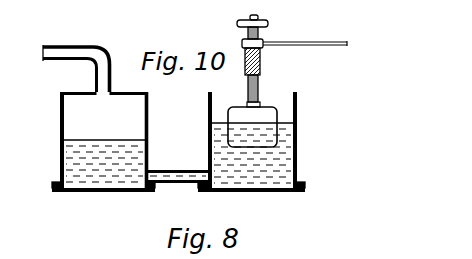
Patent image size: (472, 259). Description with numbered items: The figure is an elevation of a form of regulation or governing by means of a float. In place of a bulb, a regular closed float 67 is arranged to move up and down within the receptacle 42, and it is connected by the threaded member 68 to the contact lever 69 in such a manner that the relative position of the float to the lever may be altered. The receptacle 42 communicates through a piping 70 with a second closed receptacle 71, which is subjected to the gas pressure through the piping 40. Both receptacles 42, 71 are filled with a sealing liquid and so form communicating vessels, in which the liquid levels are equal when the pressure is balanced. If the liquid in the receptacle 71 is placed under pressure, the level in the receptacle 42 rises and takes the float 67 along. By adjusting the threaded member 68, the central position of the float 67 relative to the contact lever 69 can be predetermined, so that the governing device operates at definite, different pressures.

The piping 40 is at (83, 57).
The second closed receptacle 71 is at (60, 143).
The piping 70 is at (175, 177).
The receptacle 42 is at (289, 162).
The closed float 67 is at (237, 112).
The threaded member 68 is at (262, 70).
The contact lever 69 is at (315, 46).